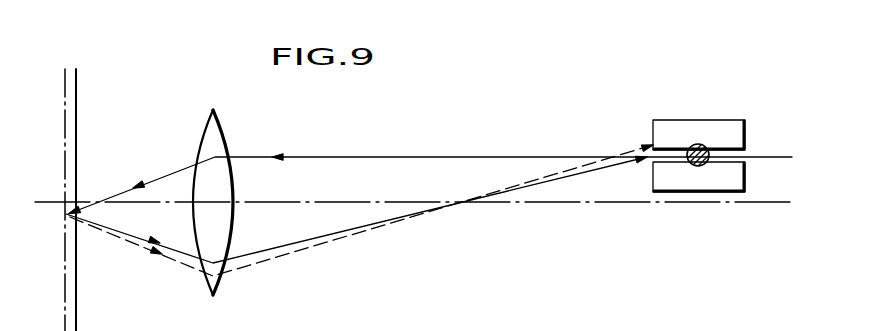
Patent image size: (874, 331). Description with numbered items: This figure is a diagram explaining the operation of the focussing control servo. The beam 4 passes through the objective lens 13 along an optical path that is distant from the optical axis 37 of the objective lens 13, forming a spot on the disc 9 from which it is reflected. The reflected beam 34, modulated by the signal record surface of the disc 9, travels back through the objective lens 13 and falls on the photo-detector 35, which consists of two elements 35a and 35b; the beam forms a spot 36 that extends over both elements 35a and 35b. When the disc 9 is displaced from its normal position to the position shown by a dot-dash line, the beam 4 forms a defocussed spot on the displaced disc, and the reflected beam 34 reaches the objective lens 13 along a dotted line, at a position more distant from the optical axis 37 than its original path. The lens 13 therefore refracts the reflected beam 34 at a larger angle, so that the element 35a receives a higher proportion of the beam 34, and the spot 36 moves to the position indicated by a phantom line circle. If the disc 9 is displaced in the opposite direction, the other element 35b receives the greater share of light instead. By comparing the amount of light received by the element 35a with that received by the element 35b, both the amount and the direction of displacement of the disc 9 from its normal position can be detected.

The beam 4 is at (443, 158).
The disc 9 is at (65, 80).
The objective lens 13 is at (218, 138).
The reflected beam 34 is at (270, 257).
The photo-detector 35 is at (728, 143).
The element 35a is at (737, 130).
The element 35b is at (737, 186).
The spot 36 is at (706, 145).
The optical axis 37 is at (518, 200).